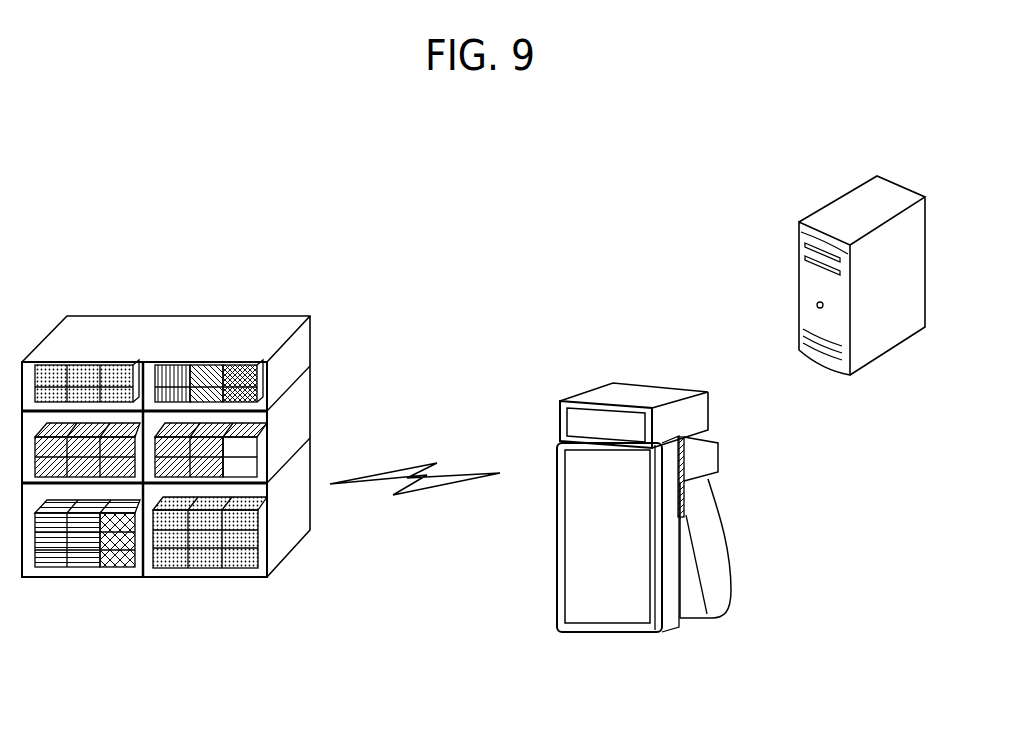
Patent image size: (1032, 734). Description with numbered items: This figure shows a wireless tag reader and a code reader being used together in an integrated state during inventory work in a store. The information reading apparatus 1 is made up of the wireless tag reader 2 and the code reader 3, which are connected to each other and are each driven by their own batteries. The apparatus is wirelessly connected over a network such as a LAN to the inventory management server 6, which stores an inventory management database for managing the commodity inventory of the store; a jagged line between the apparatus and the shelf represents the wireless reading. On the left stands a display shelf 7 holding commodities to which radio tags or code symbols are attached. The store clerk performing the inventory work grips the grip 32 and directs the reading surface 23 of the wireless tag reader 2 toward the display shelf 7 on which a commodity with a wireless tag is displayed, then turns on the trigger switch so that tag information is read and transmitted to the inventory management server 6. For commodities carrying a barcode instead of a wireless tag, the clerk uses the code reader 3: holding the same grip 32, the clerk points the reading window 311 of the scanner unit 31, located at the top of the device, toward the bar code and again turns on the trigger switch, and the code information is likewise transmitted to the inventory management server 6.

The information reading apparatus 1 is at (639, 477).
The wireless tag reader 2 is at (589, 575).
The reading surface 23 is at (575, 549).
The code reader 3 is at (639, 466).
The scanner unit 31 is at (594, 389).
The reading window 311 is at (573, 423).
The grip 32 is at (718, 547).
The inventory management server 6 is at (897, 182).
The display shelf 7 is at (256, 318).